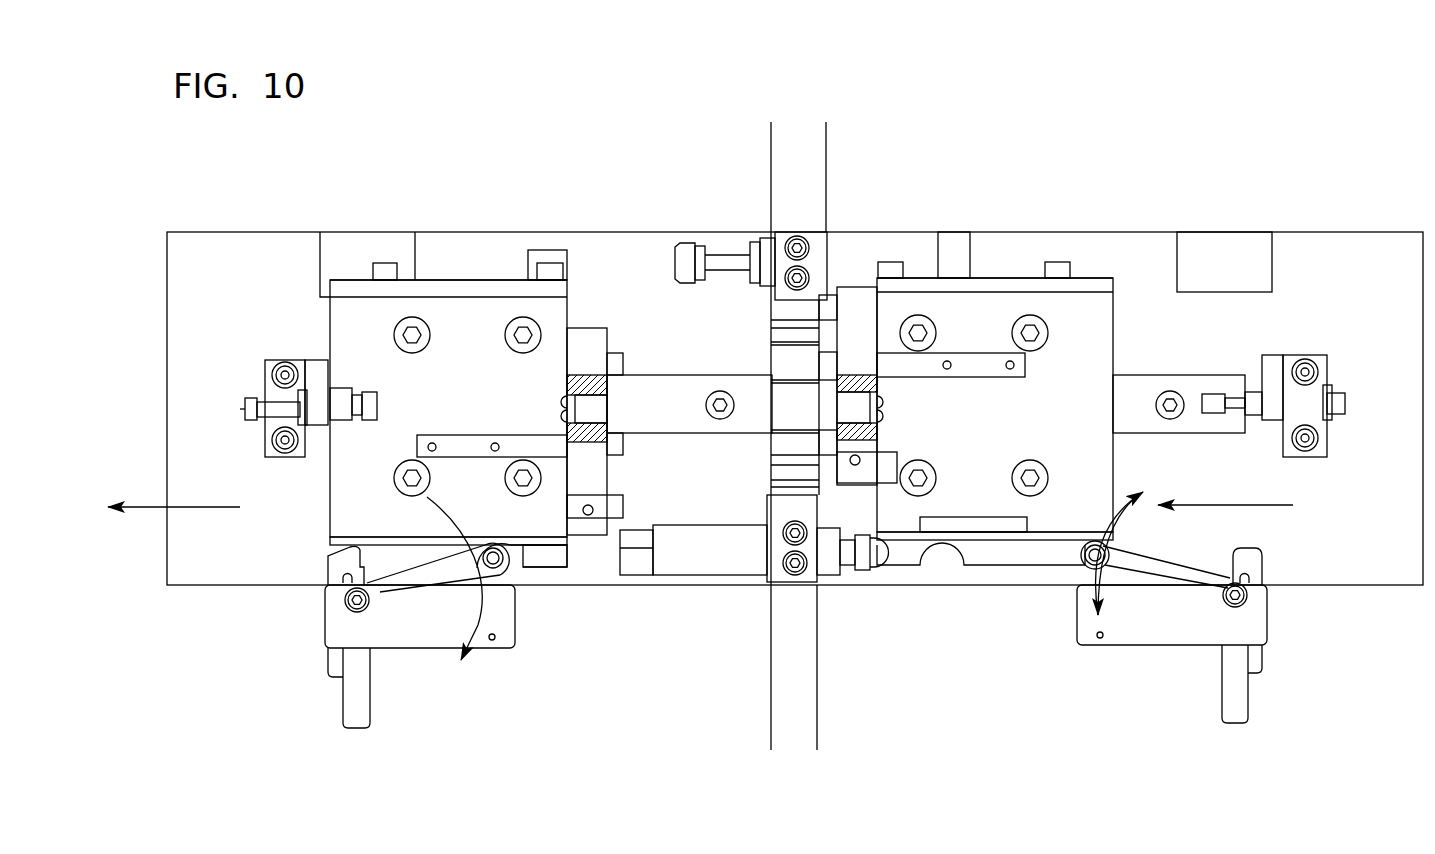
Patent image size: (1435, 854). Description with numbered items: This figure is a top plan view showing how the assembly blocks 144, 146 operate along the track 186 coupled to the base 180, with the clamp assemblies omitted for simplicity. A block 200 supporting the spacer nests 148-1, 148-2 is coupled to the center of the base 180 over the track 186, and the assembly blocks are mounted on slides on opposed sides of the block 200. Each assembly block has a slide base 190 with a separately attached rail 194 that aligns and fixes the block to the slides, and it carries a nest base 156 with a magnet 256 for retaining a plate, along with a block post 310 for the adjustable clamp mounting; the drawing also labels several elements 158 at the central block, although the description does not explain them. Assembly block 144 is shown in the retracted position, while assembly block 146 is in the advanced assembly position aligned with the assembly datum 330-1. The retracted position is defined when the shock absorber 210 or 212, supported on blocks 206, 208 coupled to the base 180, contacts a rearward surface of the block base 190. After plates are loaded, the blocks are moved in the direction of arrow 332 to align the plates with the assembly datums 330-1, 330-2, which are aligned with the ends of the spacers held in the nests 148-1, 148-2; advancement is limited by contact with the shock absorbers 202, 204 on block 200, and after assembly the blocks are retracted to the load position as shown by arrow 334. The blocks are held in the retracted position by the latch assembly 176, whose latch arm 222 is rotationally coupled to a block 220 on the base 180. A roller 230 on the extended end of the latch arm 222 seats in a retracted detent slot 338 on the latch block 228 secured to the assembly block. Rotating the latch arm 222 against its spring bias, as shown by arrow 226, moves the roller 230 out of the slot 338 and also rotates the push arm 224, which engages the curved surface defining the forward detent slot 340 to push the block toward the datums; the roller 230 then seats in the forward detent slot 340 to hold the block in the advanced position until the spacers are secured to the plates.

The assembly block 144 is at (386, 262).
The assembly block 146 is at (1078, 318).
The spacer nest 148-1 is at (780, 550).
The spacer nest 148-2 is at (810, 262).
The nest base 156 is at (600, 342).
The spacer pad 158 is at (610, 362).
The latch assembly 176 is at (518, 638).
The base 180 is at (1322, 250).
The track 186 is at (688, 415).
The slide base 190 is at (474, 415).
The rail 194 is at (465, 278).
The block 200 is at (818, 236).
The shock absorber 202 is at (862, 562).
The shock absorber 204 is at (682, 247).
The block 206 is at (268, 362).
The block 208 is at (1318, 355).
The shock absorber 210 is at (252, 406).
The shock absorber 212 is at (1338, 398).
The block 220 is at (422, 640).
The latch arm 222 is at (433, 574).
The push arm 224 is at (330, 660).
The arrow 226 is at (478, 625).
The latch block 228 is at (558, 552).
The roller 230 is at (497, 548).
The magnet 256 is at (578, 388).
The block post 310 is at (437, 447).
The assembly datum 330-1 is at (826, 140).
The assembly datum 330-2 is at (771, 158).
The arrow 332 is at (1270, 505).
The arrow 334 is at (197, 508).
The retracted detent slot 338 is at (525, 548).
The forward detent slot 340 is at (357, 550).